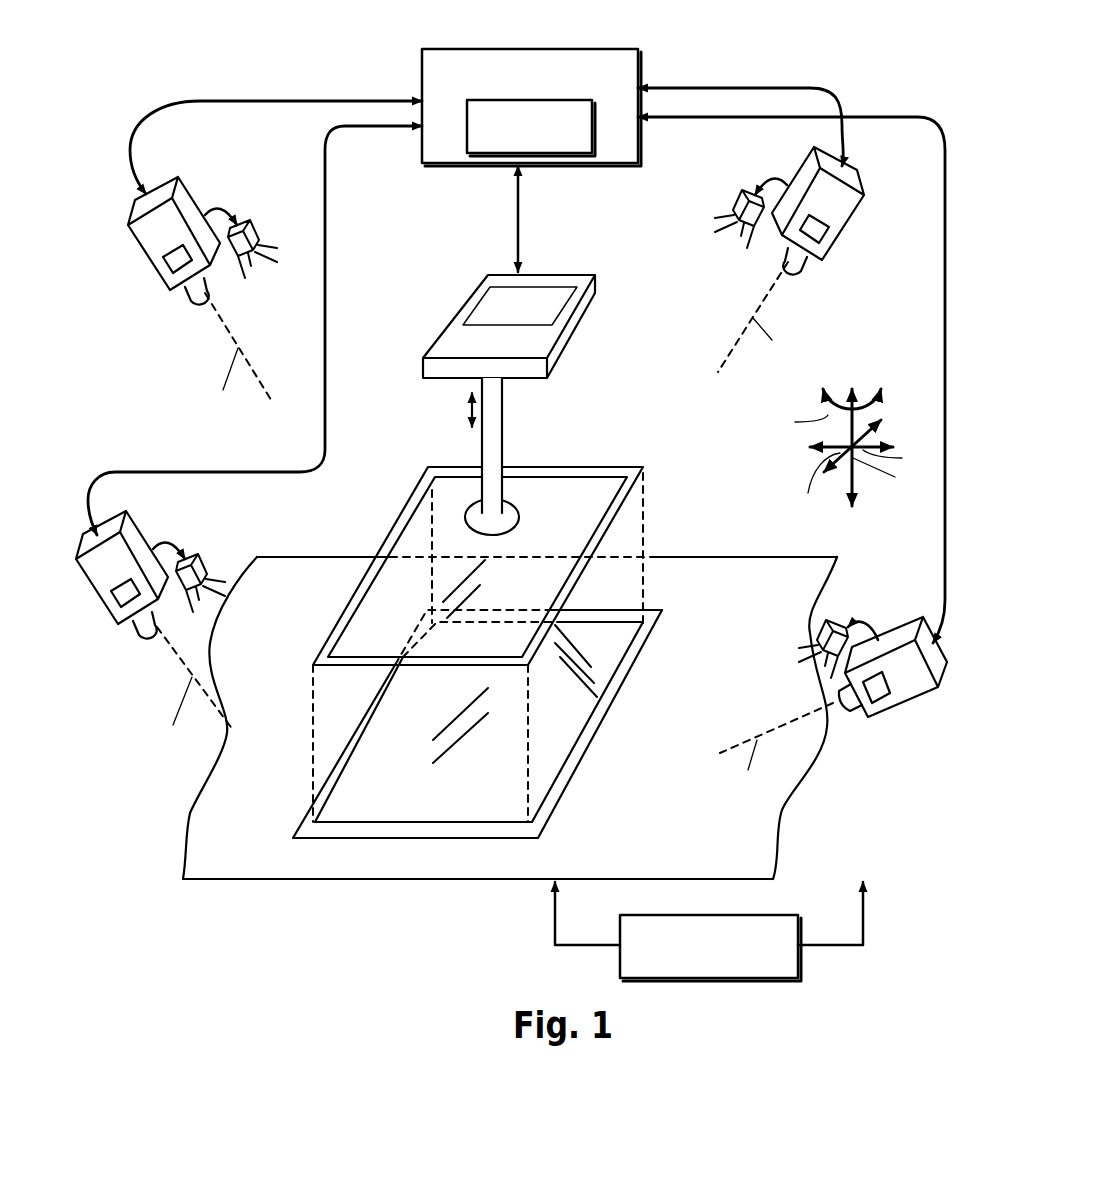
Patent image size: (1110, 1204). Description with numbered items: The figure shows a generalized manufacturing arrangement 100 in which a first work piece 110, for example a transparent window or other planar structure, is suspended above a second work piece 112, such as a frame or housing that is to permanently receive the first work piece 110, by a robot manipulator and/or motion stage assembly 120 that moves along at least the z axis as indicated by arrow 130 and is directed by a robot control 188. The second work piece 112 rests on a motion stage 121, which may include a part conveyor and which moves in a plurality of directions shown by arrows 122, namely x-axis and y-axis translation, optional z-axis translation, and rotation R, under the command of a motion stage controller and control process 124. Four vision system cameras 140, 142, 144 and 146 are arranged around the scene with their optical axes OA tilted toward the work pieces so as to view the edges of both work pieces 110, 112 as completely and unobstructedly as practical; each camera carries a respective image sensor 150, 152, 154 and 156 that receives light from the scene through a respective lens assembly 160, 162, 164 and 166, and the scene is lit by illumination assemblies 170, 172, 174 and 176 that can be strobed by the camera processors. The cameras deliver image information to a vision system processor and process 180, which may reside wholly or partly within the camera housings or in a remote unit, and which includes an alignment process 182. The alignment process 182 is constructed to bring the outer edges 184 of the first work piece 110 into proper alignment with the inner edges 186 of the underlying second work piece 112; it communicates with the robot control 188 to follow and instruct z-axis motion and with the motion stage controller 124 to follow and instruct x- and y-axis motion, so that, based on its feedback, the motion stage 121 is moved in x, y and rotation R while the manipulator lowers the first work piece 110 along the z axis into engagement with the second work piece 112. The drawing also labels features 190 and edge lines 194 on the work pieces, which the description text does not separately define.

The manufacturing arrangement 100 is at (802, 66).
The first work piece 110 is at (503, 543).
The second work piece 112 is at (499, 764).
The robot manipulator and/or motion stage assembly 120 is at (535, 389).
The motion stage 121 is at (779, 780).
The directions of motion stage movement 122 is at (850, 428).
The motion stage controller and control process 124 is at (628, 953).
The manipulator motion arrow 130 is at (467, 413).
The vision system camera 140 is at (154, 616).
The vision system camera 142 is at (200, 284).
The vision system camera 144 is at (820, 259).
The vision system camera 146 is at (833, 673).
The image sensor 150 is at (123, 628).
The image sensor 152 is at (172, 292).
The image sensor 154 is at (821, 231).
The image sensor 156 is at (881, 694).
The lens assembly 160 is at (145, 631).
The lens assembly 162 is at (195, 297).
The lens assembly 164 is at (794, 262).
The lens assembly 166 is at (849, 711).
The illumination assembly 170 is at (195, 560).
The illumination assembly 172 is at (245, 226).
The illumination assembly 174 is at (743, 190).
The illumination assembly 176 is at (843, 617).
The vision system processor/process 180 is at (499, 109).
The alignment process 182 is at (480, 145).
The outer edges of first work piece 184 is at (472, 467).
The inner edges of second work piece 186 is at (590, 623).
The robot control 188 is at (552, 293).
The alignment features of first workpiece 190 is at (615, 493).
The outer edges of second workpiece 194 is at (665, 612).